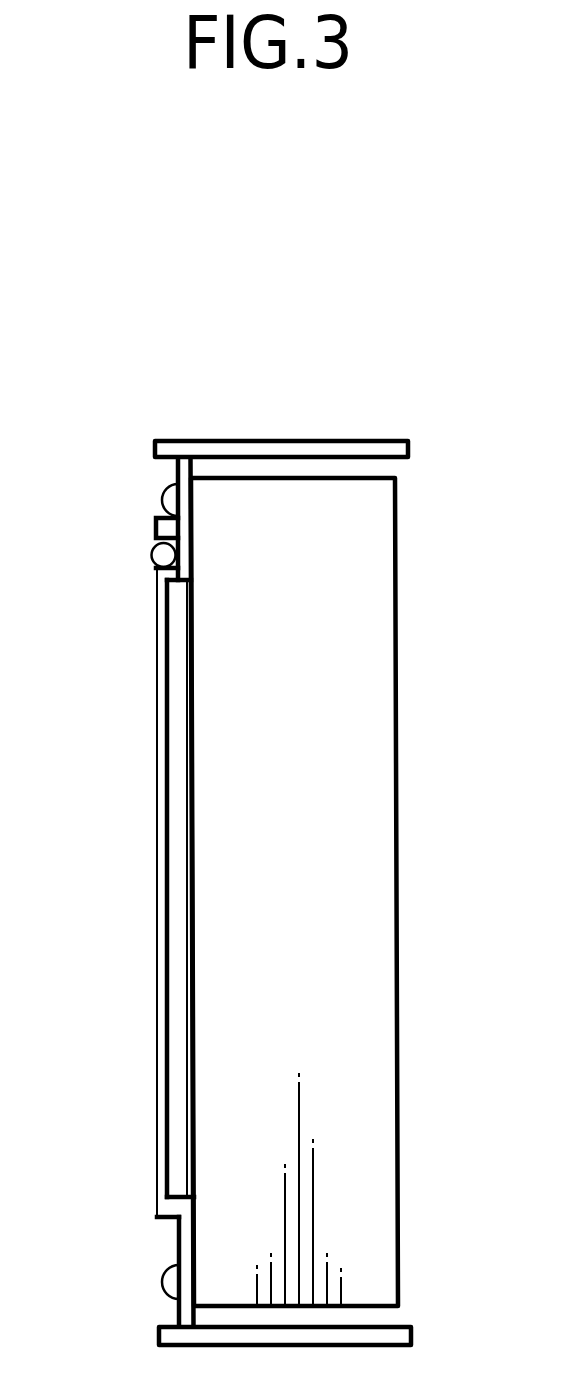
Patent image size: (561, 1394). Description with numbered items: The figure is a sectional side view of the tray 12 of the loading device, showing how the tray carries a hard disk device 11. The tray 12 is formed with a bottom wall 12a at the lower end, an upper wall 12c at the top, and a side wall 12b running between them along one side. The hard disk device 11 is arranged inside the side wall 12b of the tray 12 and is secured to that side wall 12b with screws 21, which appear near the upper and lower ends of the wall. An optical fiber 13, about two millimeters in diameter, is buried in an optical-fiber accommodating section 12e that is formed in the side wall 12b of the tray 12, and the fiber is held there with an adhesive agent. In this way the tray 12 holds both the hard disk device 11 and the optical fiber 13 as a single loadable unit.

The hard disk device 11 is at (375, 618).
The tray 12 is at (222, 440).
The bottom wall 12a is at (388, 1323).
The side wall 12b is at (157, 855).
The upper wall 12c is at (332, 448).
The optical-fiber accommodating section 12e is at (172, 570).
The optical fiber 13 is at (152, 557).
The screws 21 is at (176, 500).